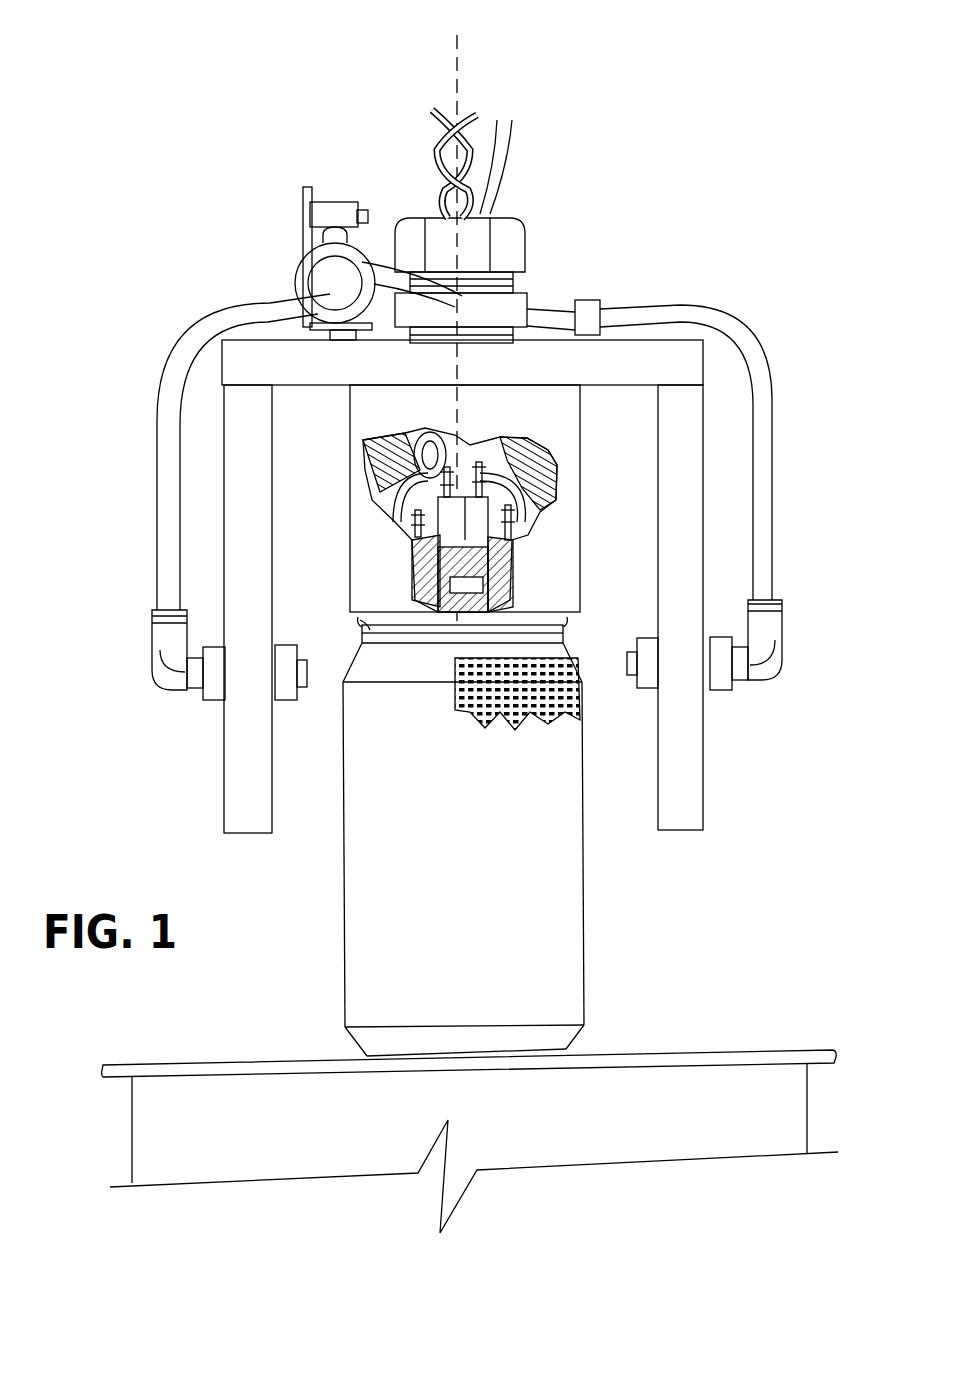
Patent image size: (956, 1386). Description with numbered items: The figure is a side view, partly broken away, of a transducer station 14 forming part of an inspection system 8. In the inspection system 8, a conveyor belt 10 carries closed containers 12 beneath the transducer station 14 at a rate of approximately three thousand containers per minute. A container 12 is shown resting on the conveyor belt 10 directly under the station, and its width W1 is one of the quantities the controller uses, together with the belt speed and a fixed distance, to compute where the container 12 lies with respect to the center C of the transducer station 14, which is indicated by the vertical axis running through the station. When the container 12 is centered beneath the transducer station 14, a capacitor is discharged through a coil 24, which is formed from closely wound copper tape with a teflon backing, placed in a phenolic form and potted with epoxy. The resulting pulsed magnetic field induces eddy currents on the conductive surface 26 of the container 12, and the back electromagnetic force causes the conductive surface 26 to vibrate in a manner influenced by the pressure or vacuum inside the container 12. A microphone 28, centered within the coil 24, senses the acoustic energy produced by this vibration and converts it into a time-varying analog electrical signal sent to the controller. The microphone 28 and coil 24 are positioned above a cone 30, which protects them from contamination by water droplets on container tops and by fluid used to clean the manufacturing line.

The inspection system 8 is at (158, 137).
The conveyor belt 10 is at (680, 1050).
The closed container 12 is at (481, 863).
The transducer station 14 is at (614, 247).
The coil 24 is at (565, 533).
The conductive surface 26 is at (555, 623).
The microphone 28 is at (413, 527).
The cone 30 is at (505, 605).
The width of the container W1 is at (367, 627).
The center of the transducer station C is at (450, 72).